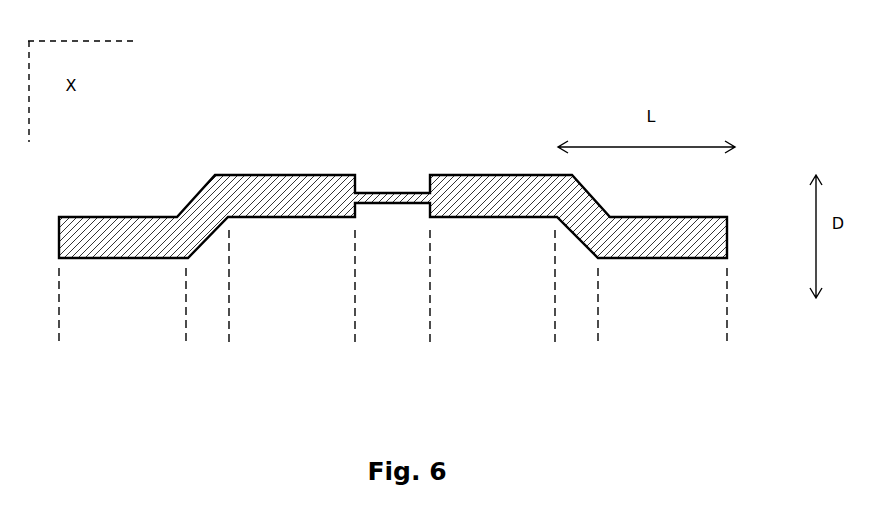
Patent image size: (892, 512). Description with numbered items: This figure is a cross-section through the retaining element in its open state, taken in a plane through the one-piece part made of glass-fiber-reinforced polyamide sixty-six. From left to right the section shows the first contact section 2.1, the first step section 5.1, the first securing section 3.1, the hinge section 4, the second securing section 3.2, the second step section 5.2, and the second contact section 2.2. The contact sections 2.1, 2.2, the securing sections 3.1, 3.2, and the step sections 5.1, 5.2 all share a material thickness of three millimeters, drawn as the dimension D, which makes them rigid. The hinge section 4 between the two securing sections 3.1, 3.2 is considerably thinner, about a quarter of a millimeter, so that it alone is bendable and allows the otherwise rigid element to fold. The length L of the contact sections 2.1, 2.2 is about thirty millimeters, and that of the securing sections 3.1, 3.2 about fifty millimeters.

The first contact section 2.1 is at (65, 358).
The first step section 5.1 is at (190, 358).
The first securing section 3.1 is at (233, 358).
The hinge section 4 is at (356, 358).
The second securing section 3.2 is at (432, 358).
The second step section 5.2 is at (559, 358).
The second contact section 2.2 is at (605, 358).